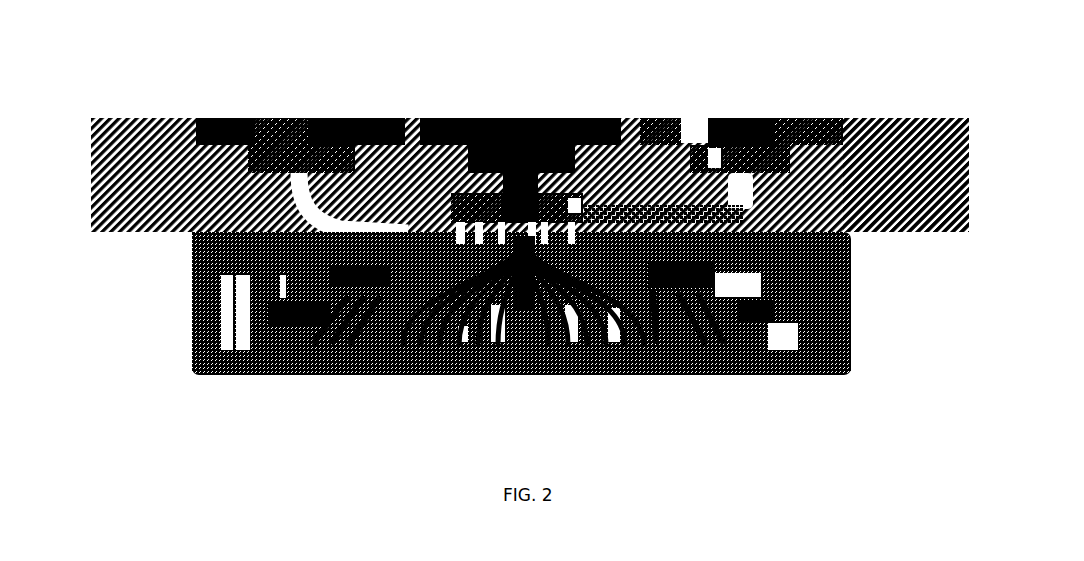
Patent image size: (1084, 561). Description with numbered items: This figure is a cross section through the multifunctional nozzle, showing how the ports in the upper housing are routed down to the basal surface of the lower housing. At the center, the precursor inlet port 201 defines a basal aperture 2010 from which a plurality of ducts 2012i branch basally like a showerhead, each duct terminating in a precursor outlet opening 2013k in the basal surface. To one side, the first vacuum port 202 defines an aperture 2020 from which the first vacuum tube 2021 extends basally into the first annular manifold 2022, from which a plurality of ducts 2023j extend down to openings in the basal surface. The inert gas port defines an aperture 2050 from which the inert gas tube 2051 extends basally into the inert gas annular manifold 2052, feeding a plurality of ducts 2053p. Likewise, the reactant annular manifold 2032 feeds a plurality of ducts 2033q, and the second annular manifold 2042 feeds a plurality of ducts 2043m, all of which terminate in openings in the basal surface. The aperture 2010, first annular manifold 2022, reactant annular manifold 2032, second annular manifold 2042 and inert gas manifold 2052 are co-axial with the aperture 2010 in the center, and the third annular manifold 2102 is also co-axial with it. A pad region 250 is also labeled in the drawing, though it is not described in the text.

The precursor inlet port 201 is at (567, 110).
The first vacuum port 202 is at (793, 110).
The connection pad 250 is at (248, 123).
The aperture 2050 is at (295, 153).
The inert gas tube 2051 is at (300, 220).
The basal aperture 2010 is at (511, 178).
The aperture 2020 is at (740, 235).
The first vacuum tube 2021 is at (575, 188).
The first annular manifold 2022 is at (640, 228).
The third annular manifold 2102 is at (222, 253).
The precursor outlet opening 2013k is at (230, 327).
The plurality of ducts 2043m is at (270, 327).
The plurality of ducts 2033q is at (333, 317).
The plurality of ducts 2053p is at (350, 310).
The plurality of ducts 2012i is at (480, 323).
The plurality of ducts 2023j is at (603, 330).
The inert gas annular manifold 2052 is at (753, 298).
The second annular manifold 2042 is at (690, 298).
The reactant annular manifold 2032 is at (662, 312).